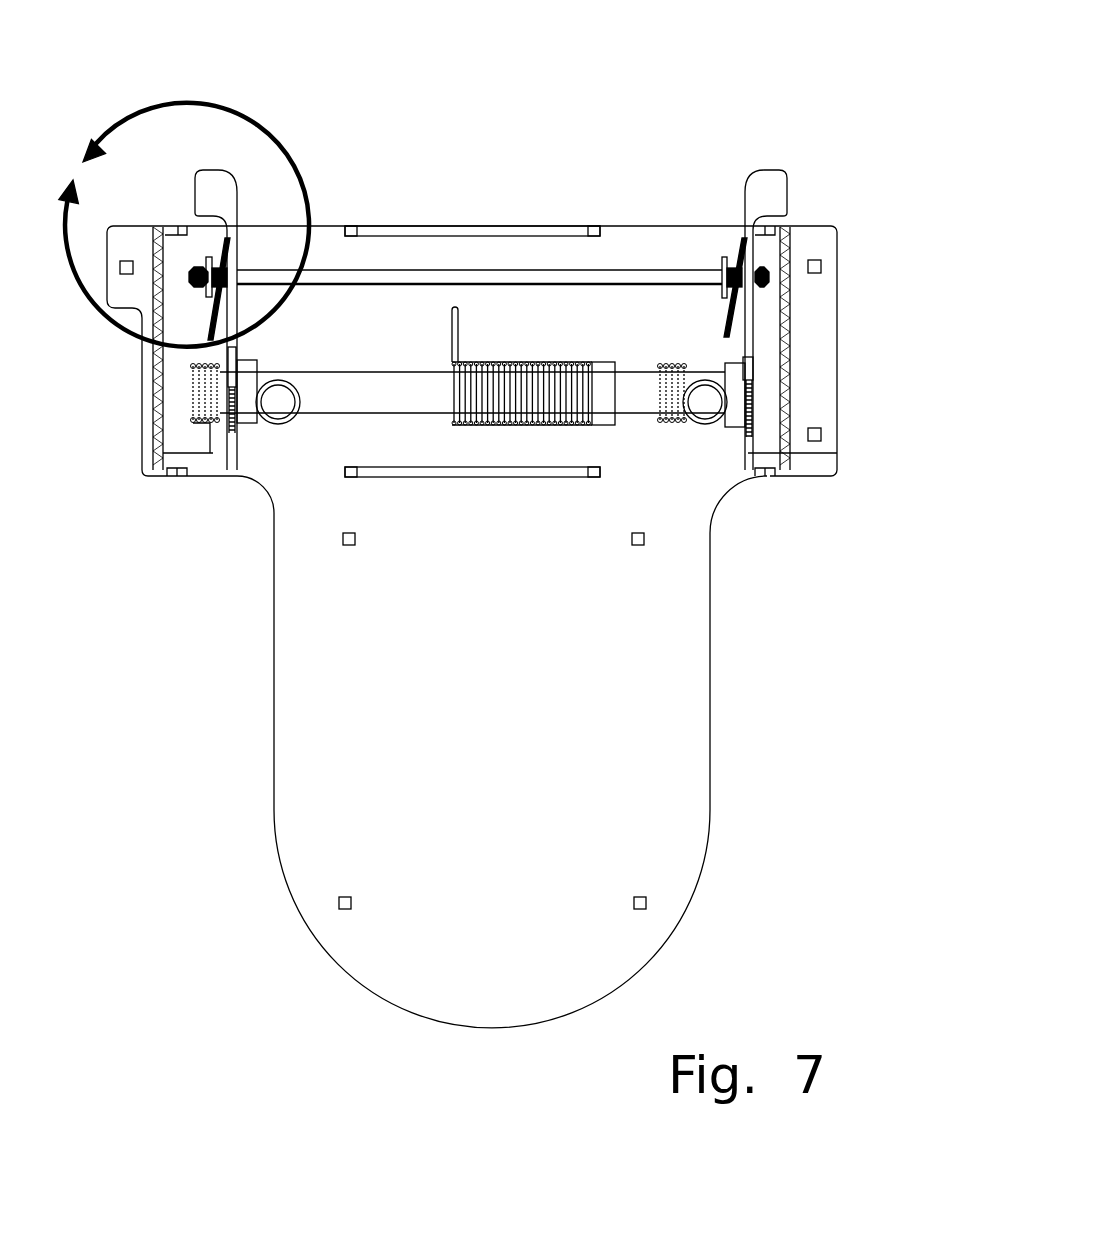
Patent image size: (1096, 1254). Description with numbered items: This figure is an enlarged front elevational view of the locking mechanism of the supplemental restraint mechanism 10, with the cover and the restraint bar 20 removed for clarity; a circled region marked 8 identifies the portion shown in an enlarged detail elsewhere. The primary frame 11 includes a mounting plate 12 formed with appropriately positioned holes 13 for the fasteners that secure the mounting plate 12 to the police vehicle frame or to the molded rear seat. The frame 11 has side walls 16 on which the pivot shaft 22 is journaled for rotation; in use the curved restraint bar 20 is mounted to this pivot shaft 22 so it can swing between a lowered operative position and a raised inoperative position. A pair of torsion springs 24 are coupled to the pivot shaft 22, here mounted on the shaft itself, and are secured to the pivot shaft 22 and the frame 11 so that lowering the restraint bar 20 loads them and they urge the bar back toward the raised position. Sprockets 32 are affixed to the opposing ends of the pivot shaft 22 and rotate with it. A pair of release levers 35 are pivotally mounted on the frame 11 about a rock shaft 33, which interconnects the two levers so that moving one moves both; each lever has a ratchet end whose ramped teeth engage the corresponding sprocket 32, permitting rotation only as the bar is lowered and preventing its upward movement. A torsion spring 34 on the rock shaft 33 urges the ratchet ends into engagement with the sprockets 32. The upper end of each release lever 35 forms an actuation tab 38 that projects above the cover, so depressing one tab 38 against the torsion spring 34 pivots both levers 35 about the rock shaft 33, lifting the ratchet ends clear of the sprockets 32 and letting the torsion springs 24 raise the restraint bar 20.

The detail view indicator (FIG. 8) 8 is at (178, 225).
The supplemental restraint mechanism 10 is at (566, 128).
The primary frame 11 is at (803, 225).
The mounting plate 12 is at (655, 713).
The holes 13 is at (630, 543).
The side walls 16 is at (790, 295).
The restraint bar 20 is at (286, 422).
The pivot shaft 22 is at (361, 395).
The torsion springs 24 is at (520, 387).
The sprockets 32 is at (235, 392).
The rock shaft 33 is at (388, 277).
The torsion spring 34 is at (210, 326).
The release levers 35 is at (233, 243).
The actuation tab 38 is at (212, 176).